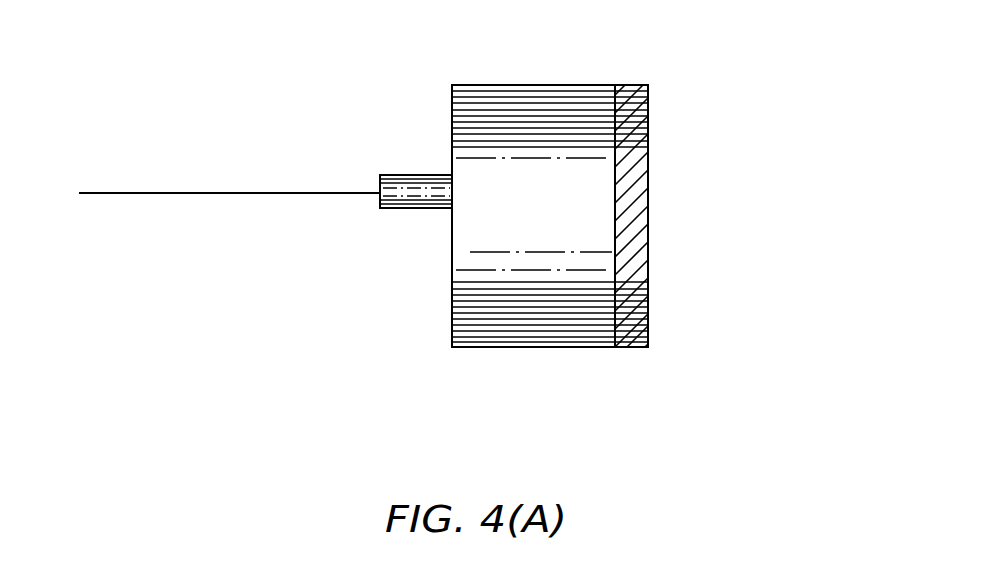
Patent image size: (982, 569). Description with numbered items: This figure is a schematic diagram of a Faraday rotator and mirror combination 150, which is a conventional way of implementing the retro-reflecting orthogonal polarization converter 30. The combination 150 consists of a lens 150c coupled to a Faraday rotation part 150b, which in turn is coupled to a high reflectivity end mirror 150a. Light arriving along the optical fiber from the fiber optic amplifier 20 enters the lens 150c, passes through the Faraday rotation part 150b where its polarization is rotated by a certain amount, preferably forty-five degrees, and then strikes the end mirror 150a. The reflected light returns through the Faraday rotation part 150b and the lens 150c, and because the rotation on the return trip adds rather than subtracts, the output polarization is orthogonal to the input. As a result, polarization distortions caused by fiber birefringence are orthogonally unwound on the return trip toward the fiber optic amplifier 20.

The Faraday rotator and mirror combination 150 is at (643, 224).
The high reflectivity end mirror 150a is at (726, 216).
The Faraday rotation part 150b is at (601, 406).
The lens 150c is at (397, 175).
The retro-reflecting orthogonal polarization converter 30 is at (409, 135).
The fiber optic amplifier 20 is at (38, 212).